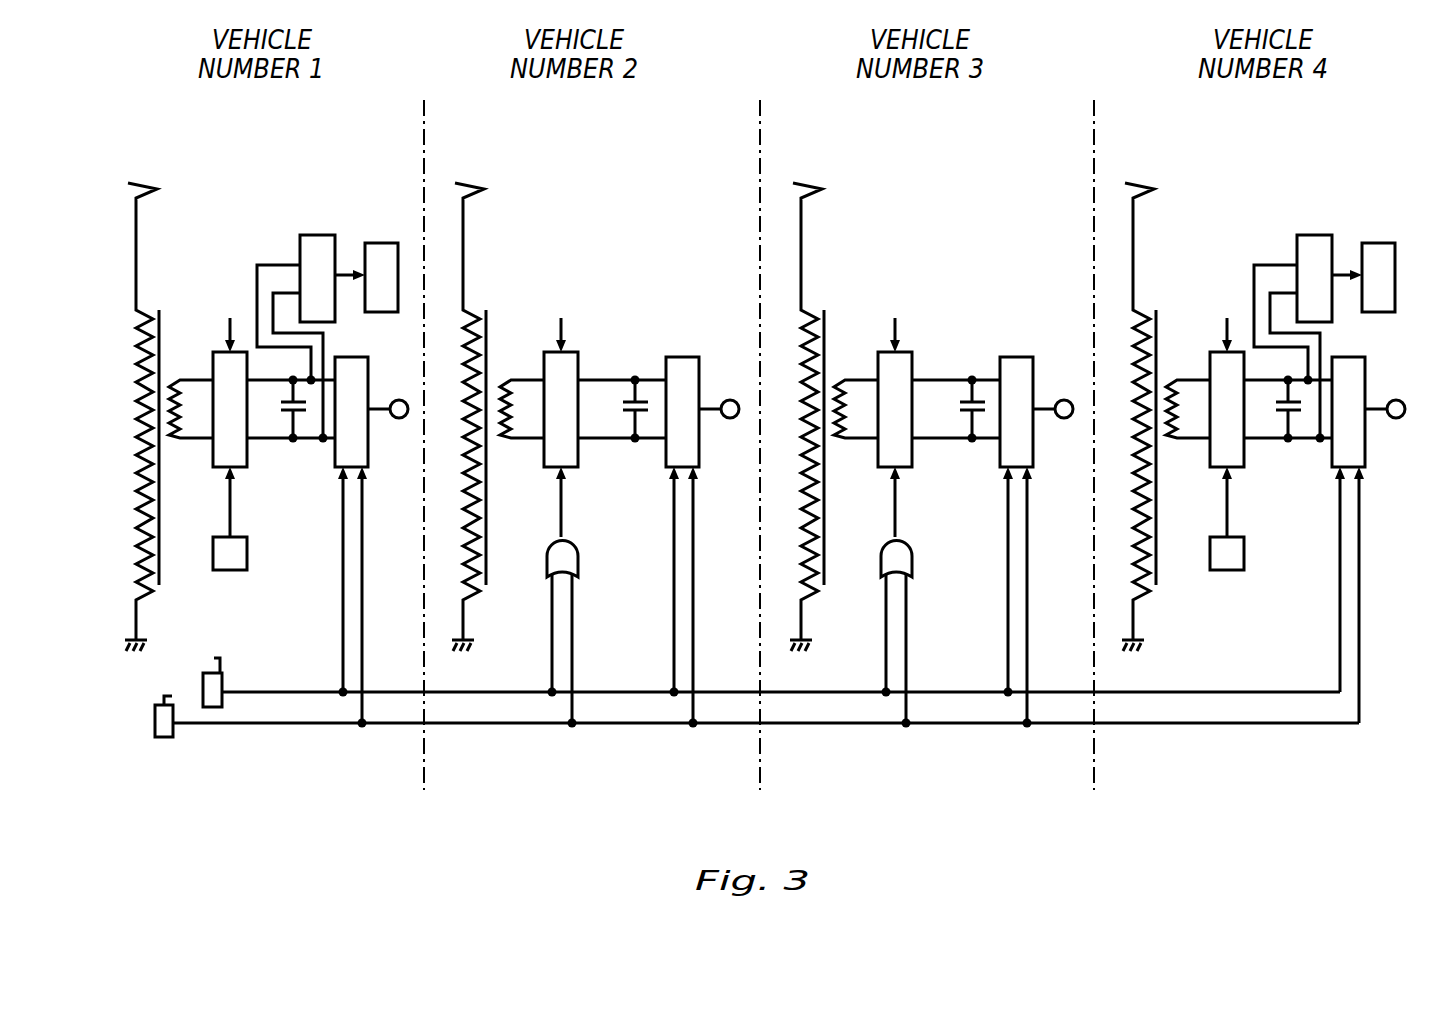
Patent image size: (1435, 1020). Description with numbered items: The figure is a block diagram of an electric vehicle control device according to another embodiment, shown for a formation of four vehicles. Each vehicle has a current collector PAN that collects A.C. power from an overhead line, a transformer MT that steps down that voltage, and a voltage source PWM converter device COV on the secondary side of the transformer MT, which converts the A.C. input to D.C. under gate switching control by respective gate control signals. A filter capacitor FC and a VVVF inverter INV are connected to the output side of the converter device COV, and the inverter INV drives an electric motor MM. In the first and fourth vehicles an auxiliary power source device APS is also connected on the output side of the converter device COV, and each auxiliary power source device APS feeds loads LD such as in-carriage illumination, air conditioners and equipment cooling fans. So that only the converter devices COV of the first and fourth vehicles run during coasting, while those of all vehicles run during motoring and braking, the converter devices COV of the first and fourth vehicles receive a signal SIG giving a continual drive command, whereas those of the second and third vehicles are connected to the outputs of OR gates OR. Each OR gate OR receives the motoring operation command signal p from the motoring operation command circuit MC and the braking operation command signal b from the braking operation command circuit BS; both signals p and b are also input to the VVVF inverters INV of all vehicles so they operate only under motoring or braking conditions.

The current collector PAN is at (148, 182).
The transformer MT is at (160, 312).
The voltage source PWM converter device COV is at (213, 457).
The filter capacitor FC is at (292, 426).
The VVVF inverter INV is at (369, 360).
The electric motor MM is at (399, 418).
The auxiliary power source device APS is at (316, 234).
The load LD is at (382, 242).
The signal SIG is at (247, 552).
The OR gate OR is at (578, 560).
The motoring operation command circuit MC is at (223, 680).
The braking operation command circuit BS is at (164, 738).
The motoring operation command signal p is at (781, 679).
The braking operation command signal b is at (766, 710).